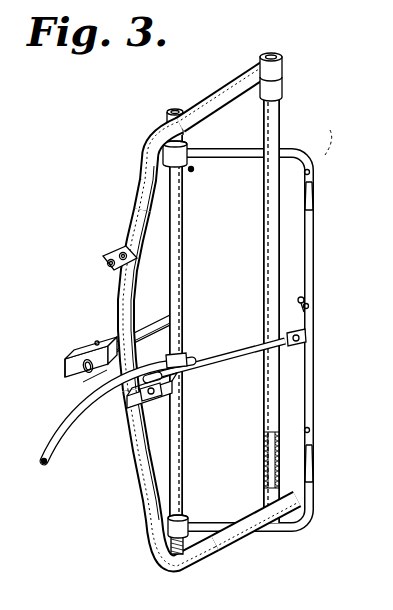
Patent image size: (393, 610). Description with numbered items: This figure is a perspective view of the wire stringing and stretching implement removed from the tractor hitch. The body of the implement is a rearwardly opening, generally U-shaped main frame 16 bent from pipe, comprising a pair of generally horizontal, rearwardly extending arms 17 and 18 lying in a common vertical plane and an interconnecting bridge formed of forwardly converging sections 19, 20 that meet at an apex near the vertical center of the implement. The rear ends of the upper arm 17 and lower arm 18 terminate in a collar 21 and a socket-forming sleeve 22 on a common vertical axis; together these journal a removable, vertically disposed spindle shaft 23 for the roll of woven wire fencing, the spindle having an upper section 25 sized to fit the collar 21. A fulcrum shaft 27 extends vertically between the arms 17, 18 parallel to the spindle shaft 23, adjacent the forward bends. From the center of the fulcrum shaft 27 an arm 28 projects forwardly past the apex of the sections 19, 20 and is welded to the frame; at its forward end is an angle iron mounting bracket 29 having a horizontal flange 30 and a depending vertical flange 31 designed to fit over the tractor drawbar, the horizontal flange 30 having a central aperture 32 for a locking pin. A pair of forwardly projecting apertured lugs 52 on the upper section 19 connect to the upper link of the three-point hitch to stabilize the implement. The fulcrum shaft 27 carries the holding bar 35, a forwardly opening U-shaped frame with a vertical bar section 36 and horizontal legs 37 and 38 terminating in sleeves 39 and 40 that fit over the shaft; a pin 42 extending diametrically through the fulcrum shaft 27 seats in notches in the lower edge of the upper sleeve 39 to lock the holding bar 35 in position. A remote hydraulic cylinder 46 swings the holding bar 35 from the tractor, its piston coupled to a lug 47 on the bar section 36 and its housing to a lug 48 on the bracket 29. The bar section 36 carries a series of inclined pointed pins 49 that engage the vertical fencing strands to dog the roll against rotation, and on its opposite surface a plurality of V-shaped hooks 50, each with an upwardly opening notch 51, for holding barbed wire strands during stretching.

The main frame 16 is at (140, 157).
The upper arm 17 is at (211, 98).
The lower arm 18 is at (213, 546).
The forwardly converging section 19 is at (131, 218).
The forwardly converging section 20 is at (142, 495).
The collar 21 is at (284, 78).
The socket-forming sleeve 22 is at (301, 510).
The spindle shaft 23 is at (283, 124).
The upper section of spindle shaft 25 is at (264, 240).
The fulcrum shaft 27 is at (186, 266).
The arm 28 is at (150, 328).
The angle iron mounting bracket 29 is at (84, 381).
The horizontal flange 30 is at (90, 347).
The vertical flange 31 is at (64, 362).
The aperture 32 is at (88, 392).
The holding bar 35 is at (316, 272).
The vertical bar section 36 is at (316, 404).
The upper leg 37 is at (232, 149).
The lower leg 38 is at (220, 522).
The upper sleeve 39 is at (190, 150).
The lower sleeve 40 is at (189, 517).
The pin 42 is at (195, 170).
The remote hydraulic cylinder 46 is at (222, 355).
The lug 47 is at (306, 343).
The lug 48 is at (135, 398).
The pointed pins 49 is at (311, 196).
The V-shaped hooks 50 is at (310, 172).
The notch 51 is at (303, 302).
The apertured lugs 52 is at (118, 250).